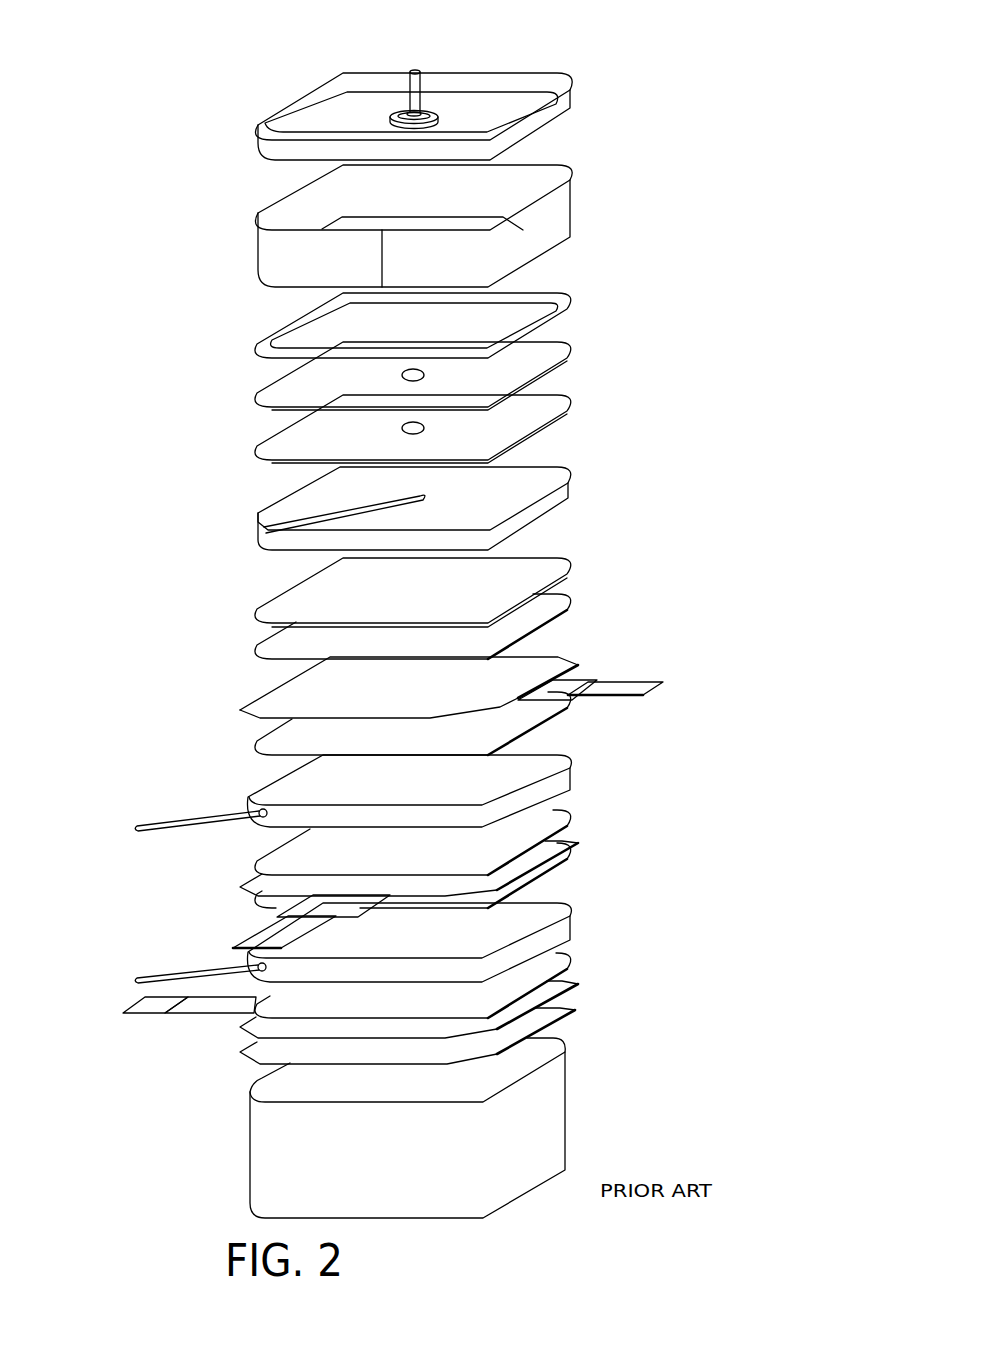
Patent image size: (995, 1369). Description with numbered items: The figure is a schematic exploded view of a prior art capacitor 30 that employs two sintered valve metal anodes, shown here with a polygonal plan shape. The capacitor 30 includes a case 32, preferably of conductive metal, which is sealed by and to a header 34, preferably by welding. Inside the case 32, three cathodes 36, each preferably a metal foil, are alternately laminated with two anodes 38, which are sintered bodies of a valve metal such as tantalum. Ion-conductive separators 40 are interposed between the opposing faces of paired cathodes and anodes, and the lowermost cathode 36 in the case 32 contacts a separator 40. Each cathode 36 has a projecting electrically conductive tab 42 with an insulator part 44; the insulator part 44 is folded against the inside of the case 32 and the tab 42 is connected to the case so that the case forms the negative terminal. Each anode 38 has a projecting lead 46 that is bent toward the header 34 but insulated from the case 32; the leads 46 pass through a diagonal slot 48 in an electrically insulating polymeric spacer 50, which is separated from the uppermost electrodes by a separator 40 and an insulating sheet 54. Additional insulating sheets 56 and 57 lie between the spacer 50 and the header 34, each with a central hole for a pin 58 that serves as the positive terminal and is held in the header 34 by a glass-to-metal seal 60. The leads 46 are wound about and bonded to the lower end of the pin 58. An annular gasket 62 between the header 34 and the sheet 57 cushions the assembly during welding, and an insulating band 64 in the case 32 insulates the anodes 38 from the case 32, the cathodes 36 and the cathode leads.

The capacitor 30 is at (188, 311).
The case 32 is at (563, 1158).
The header 34 is at (573, 100).
The cathode 36 is at (560, 658).
The anode 38 is at (573, 765).
The separator 40 is at (566, 606).
The tab 42 is at (657, 683).
The insulator part 44 is at (565, 680).
The lead 46 is at (178, 818).
The diagonal slot 48 is at (298, 518).
The spacer 50 is at (570, 480).
The insulating sheet 54 is at (565, 565).
The insulating sheet 56 is at (570, 405).
The insulating sheet 57 is at (570, 352).
The pin 58 is at (417, 70).
The glass-to-metal seal 60 is at (433, 113).
The annular gasket 62 is at (573, 302).
The insulating band 64 is at (573, 197).